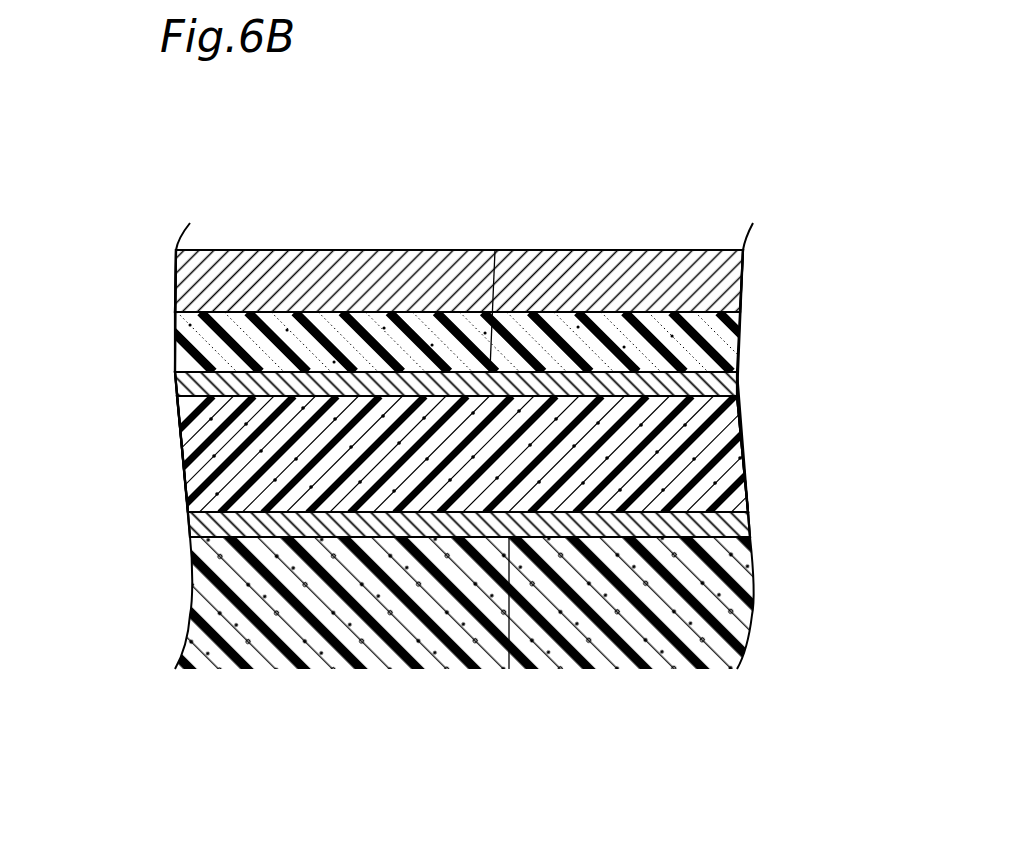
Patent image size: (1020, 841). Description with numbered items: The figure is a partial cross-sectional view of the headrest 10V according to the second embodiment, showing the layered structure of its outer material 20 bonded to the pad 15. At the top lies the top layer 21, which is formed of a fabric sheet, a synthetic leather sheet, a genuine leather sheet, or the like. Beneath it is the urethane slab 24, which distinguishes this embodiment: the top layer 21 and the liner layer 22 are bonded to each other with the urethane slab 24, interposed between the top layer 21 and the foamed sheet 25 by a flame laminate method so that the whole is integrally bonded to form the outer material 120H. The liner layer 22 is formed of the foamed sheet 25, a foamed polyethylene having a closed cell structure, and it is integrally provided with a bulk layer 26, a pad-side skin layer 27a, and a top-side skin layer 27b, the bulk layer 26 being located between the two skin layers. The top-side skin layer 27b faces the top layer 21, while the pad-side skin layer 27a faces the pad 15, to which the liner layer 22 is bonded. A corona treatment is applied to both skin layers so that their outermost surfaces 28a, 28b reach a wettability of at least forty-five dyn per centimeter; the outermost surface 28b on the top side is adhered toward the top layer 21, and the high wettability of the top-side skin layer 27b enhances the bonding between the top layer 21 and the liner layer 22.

The headrest 10V is at (295, 198).
The outer material 20 is at (638, 250).
The top layer 21 is at (186, 297).
The urethane slab 24 is at (180, 340).
The liner layer 22 is at (182, 423).
The outer material 120H is at (118, 447).
The top-side skin layer 27b is at (737, 380).
The bulk layer 26 is at (740, 458).
The pad-side skin layer 27a is at (748, 518).
The foamed sheet 25 is at (837, 370).
The pad 15 is at (753, 597).
The outermost surface 28a is at (509, 669).
The outermost surface 28b is at (495, 250).